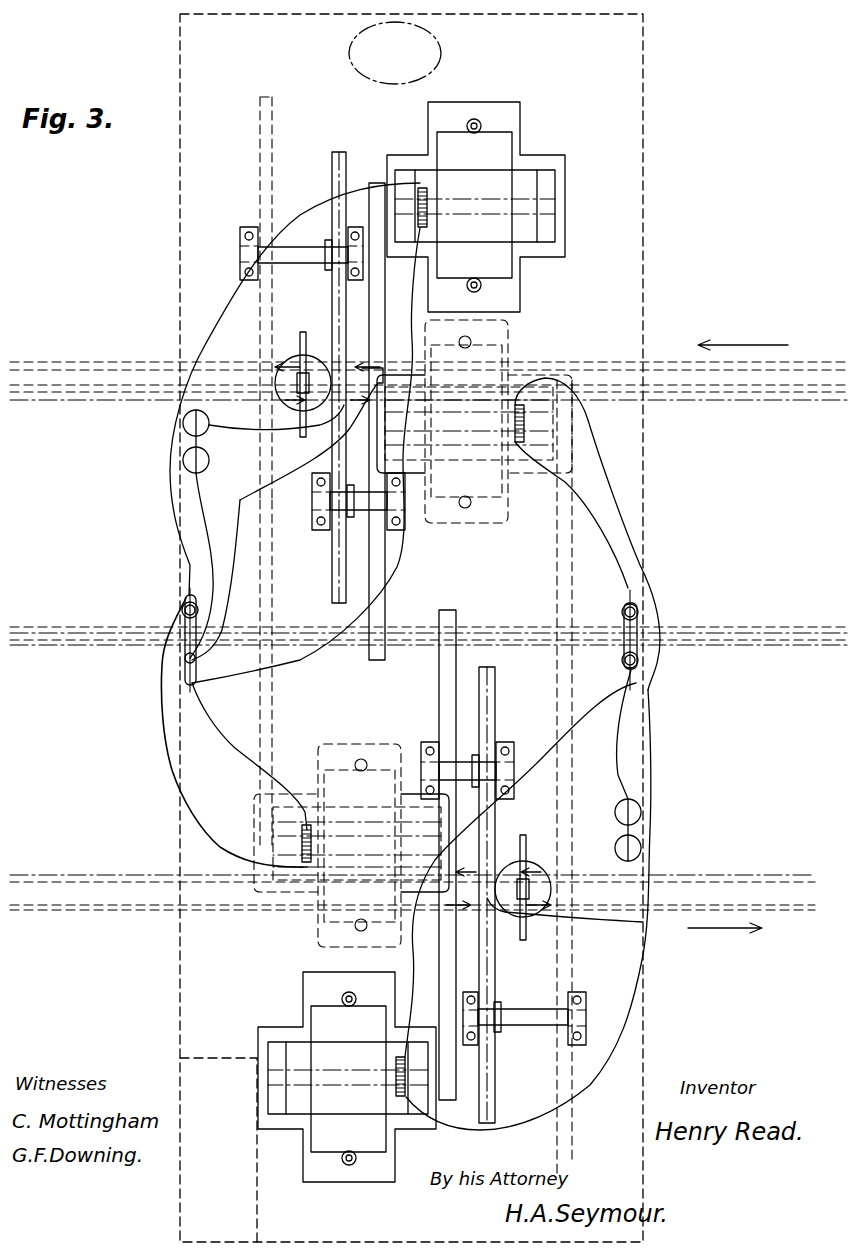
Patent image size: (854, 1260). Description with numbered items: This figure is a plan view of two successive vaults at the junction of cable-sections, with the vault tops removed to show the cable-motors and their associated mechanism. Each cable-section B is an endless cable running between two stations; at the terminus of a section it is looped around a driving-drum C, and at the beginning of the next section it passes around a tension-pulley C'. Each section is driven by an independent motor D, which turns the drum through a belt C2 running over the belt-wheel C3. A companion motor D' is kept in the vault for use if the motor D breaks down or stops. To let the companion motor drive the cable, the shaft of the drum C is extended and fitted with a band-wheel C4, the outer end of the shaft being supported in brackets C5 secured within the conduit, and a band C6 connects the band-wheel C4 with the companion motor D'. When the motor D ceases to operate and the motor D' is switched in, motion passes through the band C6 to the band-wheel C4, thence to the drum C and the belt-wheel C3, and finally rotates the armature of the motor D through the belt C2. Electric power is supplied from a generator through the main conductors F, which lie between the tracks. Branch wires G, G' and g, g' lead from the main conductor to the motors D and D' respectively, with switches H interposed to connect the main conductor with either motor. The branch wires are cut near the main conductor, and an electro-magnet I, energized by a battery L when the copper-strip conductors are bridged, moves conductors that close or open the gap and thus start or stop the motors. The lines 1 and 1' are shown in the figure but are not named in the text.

The cable-section B is at (113, 362).
The conductors F is at (430, 634).
The driving-drum C is at (415, 637).
The tension-pulley C' is at (413, 627).
The belt C2 is at (418, 1003).
The belt-wheel C3 is at (456, 690).
The band-wheel C4 is at (578, 1148).
The brackets C5 is at (593, 1036).
The band C6 is at (275, 602).
The motor D is at (411, 642).
The companion motor D' is at (413, 633).
The branch wire G is at (279, 525).
The branch wire G' is at (438, 679).
The switches H is at (184, 598).
The electro-magnet I is at (640, 612).
The battery L is at (615, 826).
The wire 1 is at (267, 531).
The wire 1' is at (565, 796).
The branch wire g is at (410, 636).
The branch wire g' is at (426, 565).